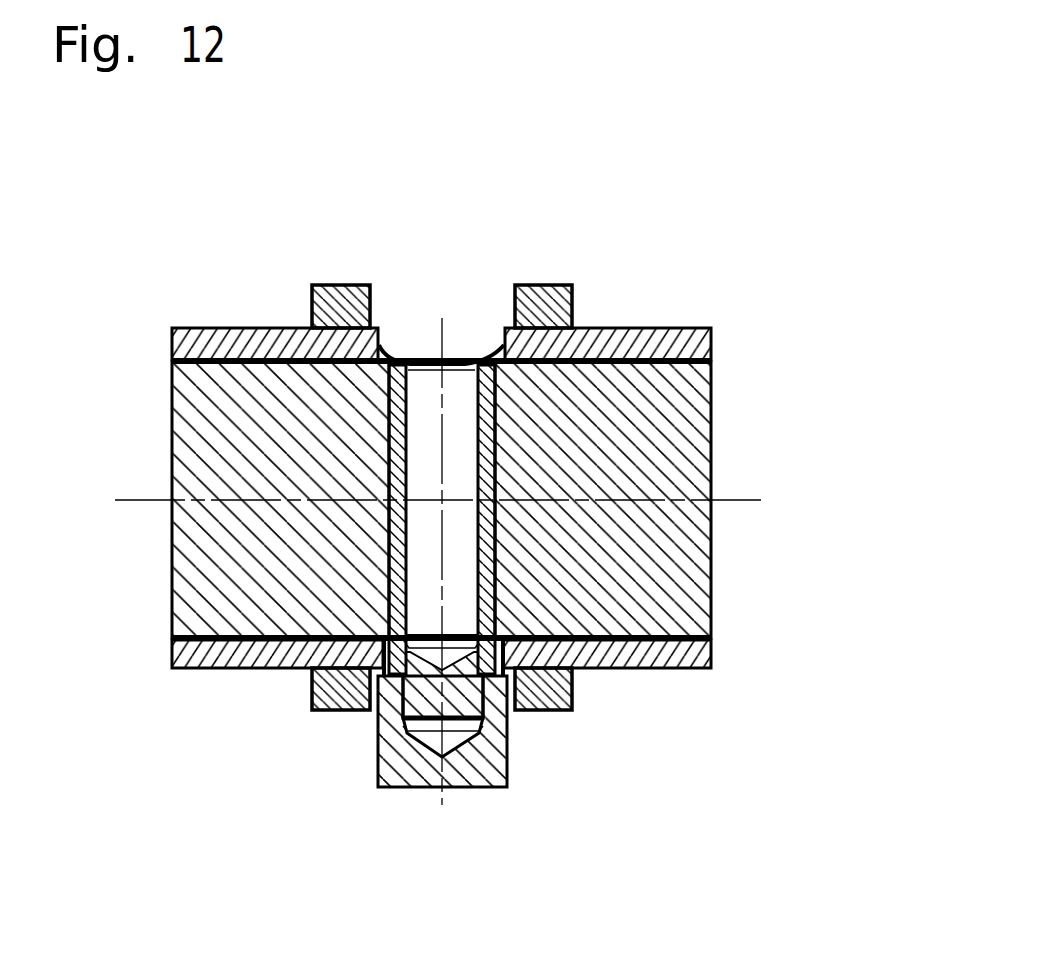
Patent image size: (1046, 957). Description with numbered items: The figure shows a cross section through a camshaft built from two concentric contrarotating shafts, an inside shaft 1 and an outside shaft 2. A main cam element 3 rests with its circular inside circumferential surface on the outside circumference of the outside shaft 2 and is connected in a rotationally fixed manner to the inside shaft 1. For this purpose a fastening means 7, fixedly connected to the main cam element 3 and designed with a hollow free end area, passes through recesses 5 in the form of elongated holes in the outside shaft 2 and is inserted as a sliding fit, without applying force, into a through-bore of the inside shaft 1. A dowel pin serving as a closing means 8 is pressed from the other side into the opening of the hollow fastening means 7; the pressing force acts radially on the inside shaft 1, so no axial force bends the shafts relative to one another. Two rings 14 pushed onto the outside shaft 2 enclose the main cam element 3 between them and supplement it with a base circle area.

The inside shaft 1 is at (565, 490).
The outside shaft 2 is at (711, 668).
The main cam element 3 is at (507, 787).
The recesses 5 is at (381, 338).
The fastening means 7 is at (378, 778).
The closing means 8 is at (460, 397).
The rings 14 is at (352, 285).